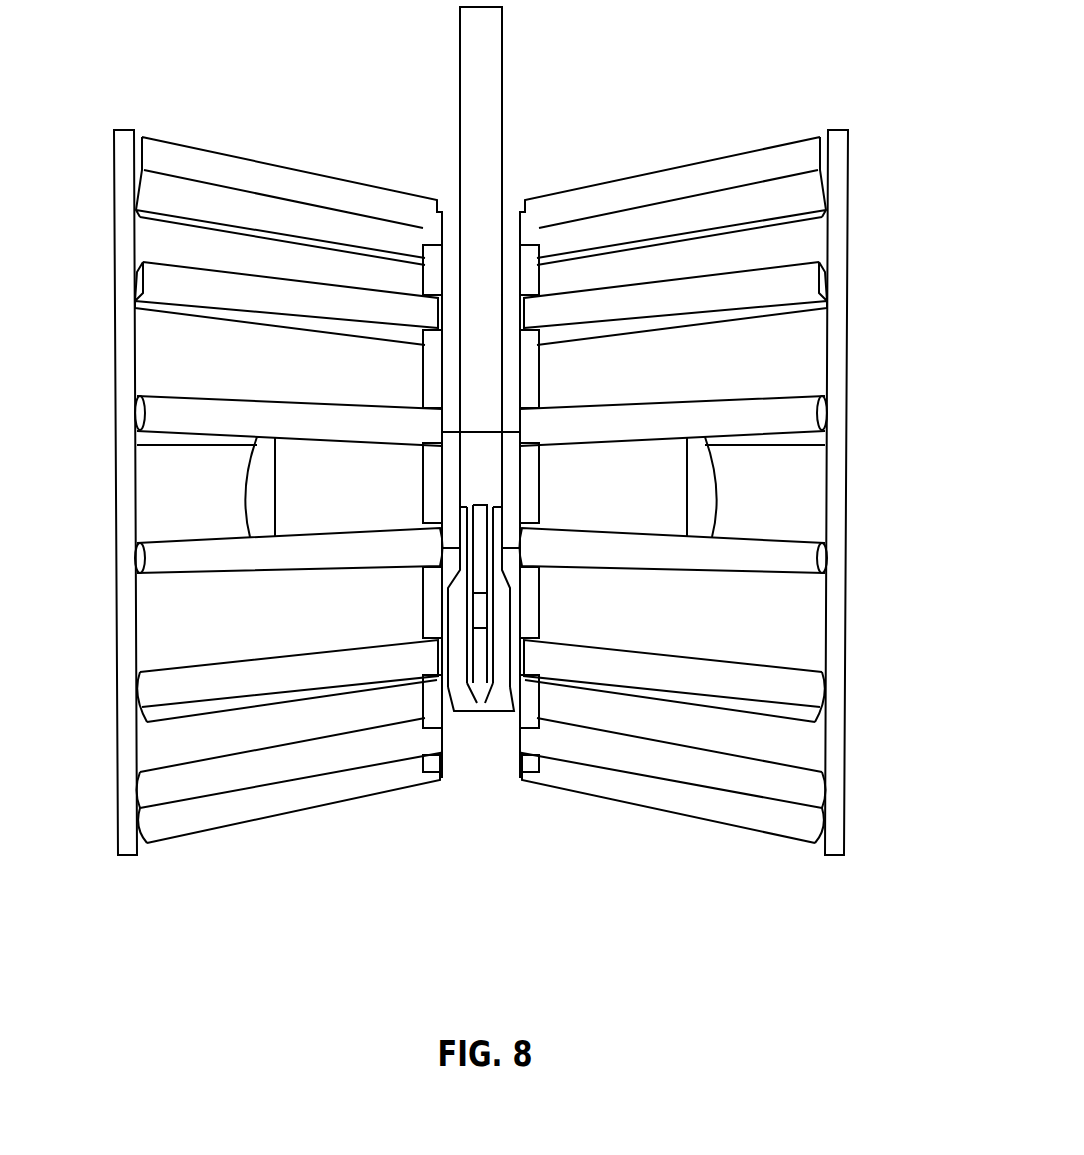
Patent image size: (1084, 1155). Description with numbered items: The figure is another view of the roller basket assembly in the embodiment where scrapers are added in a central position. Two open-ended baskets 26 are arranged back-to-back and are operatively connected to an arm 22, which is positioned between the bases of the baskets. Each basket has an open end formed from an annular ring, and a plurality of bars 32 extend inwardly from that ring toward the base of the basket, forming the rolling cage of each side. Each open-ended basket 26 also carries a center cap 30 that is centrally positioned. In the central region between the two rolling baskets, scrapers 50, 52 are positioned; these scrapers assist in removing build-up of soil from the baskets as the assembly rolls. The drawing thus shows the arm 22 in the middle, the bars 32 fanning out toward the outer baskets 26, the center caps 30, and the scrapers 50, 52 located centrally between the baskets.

The arm 22 is at (480, 92).
The open-ended basket 26 is at (121, 135).
The center cap 30 is at (253, 493).
The bar 32 is at (250, 153).
The scraper 50 is at (457, 621).
The scraper 52 is at (500, 680).